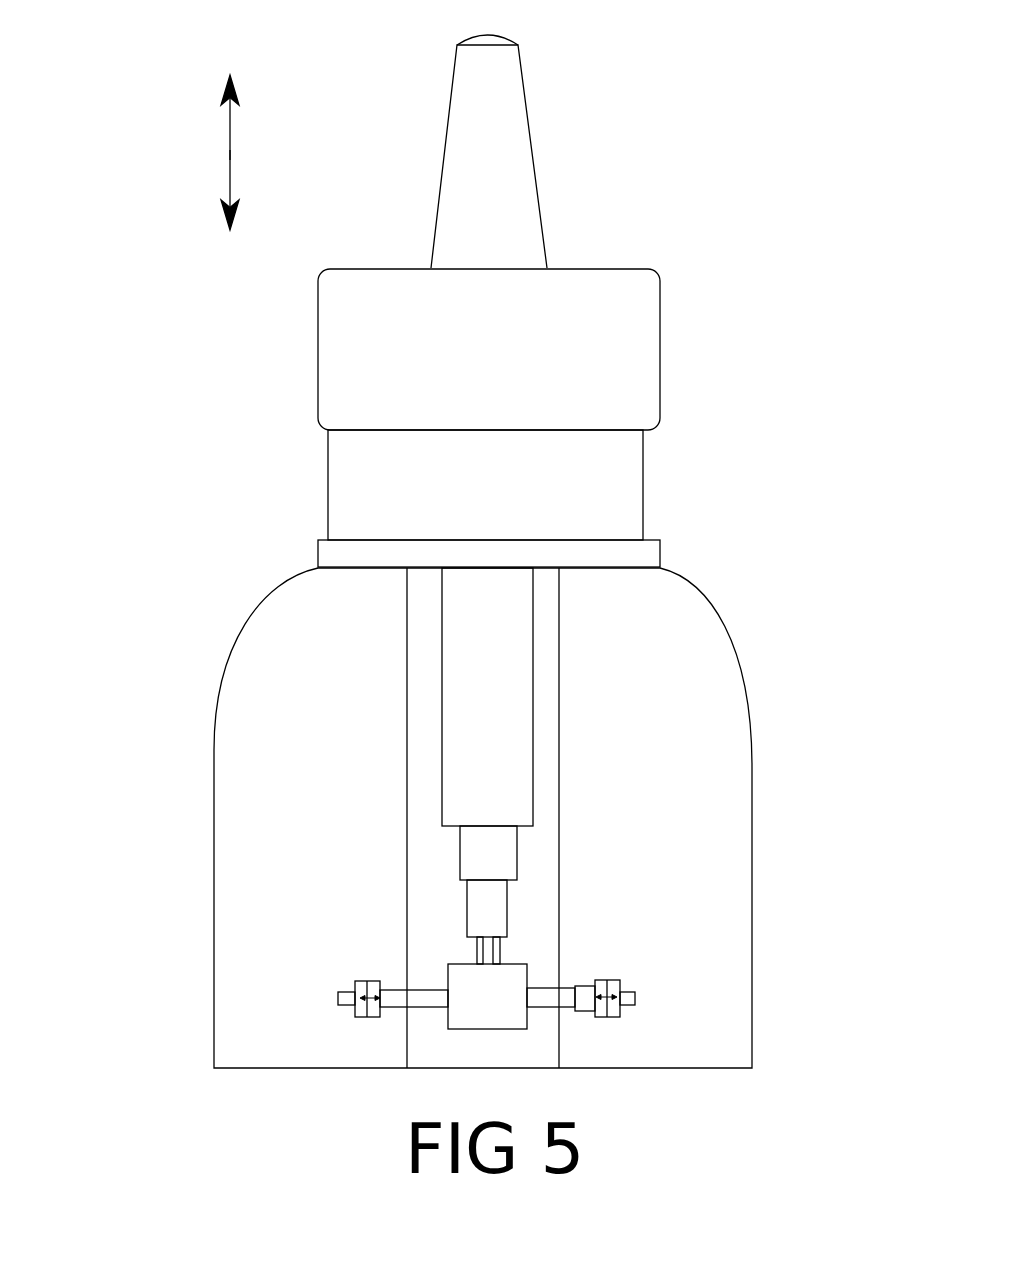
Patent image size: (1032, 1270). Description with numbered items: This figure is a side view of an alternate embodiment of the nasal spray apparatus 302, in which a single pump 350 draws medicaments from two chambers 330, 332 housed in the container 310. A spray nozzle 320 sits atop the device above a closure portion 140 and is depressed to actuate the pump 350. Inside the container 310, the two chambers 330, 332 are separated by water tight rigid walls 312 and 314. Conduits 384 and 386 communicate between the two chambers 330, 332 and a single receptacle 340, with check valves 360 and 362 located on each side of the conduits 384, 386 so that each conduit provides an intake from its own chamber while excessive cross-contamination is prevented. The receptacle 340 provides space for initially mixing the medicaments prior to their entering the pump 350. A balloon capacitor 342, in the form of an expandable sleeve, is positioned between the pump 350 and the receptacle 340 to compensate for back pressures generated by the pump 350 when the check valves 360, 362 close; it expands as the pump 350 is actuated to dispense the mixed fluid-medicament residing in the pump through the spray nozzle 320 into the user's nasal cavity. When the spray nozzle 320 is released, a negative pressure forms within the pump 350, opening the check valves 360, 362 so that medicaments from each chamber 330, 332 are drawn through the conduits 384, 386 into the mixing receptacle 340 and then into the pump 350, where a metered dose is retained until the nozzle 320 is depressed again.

The dispensing assembly 302 is at (203, 451).
The spray nozzle 320 is at (587, 231).
The neck / closure 140 is at (333, 474).
The container 310 is at (746, 644).
The water tight rigid wall 312 is at (407, 685).
The water tight rigid wall 314 is at (560, 866).
The chamber 330 is at (276, 870).
The chamber 332 is at (724, 777).
The pump 350 is at (496, 763).
The balloon capacitor 342 is at (475, 948).
The receptacle 340 is at (476, 1022).
The check valve 360 is at (363, 981).
The check valve 362 is at (620, 980).
The conduit 384 is at (432, 998).
The conduit 386 is at (538, 1002).